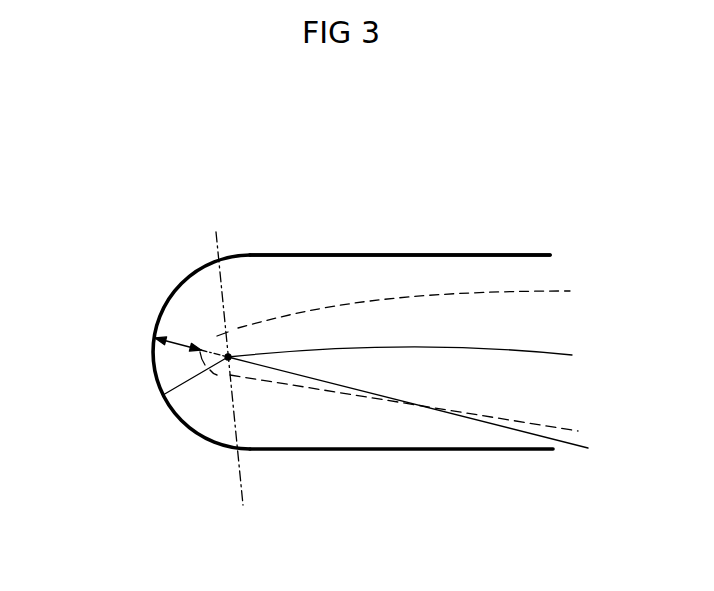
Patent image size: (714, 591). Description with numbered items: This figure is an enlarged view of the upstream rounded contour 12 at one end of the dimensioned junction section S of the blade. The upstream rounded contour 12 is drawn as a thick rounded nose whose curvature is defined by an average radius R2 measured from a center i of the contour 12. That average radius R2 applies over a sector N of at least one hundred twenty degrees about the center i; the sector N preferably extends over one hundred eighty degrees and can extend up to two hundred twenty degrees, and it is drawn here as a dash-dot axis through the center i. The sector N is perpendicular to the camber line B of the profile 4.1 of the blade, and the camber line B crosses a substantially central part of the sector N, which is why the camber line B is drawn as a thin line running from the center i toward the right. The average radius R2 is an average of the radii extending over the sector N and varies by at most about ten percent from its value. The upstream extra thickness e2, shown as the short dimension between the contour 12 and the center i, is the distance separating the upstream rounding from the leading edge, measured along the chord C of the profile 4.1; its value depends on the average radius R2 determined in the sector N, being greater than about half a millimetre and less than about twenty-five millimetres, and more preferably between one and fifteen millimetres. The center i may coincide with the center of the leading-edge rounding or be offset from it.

The upstream rounded contour 12 is at (153, 356).
The junction section S is at (253, 229).
The center of the upstream rounded contour i is at (228, 357).
The upstream extra thickness e2 is at (193, 340).
The average radius R2 is at (193, 382).
The sector N is at (272, 483).
The profile of the blade 4.1 is at (443, 292).
The camber line B is at (545, 352).
The chord C is at (494, 424).